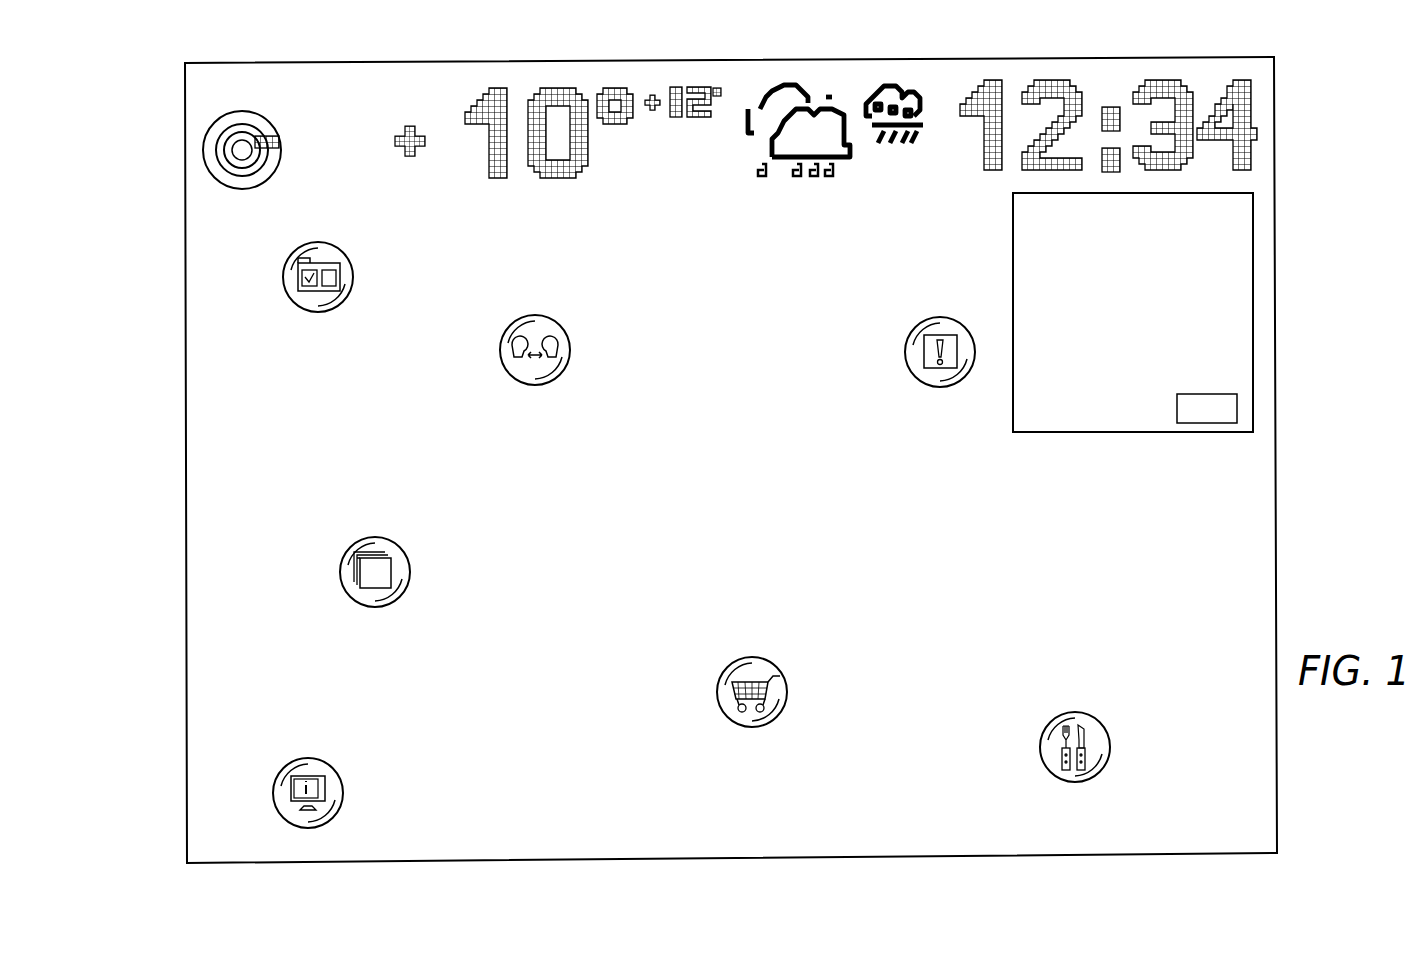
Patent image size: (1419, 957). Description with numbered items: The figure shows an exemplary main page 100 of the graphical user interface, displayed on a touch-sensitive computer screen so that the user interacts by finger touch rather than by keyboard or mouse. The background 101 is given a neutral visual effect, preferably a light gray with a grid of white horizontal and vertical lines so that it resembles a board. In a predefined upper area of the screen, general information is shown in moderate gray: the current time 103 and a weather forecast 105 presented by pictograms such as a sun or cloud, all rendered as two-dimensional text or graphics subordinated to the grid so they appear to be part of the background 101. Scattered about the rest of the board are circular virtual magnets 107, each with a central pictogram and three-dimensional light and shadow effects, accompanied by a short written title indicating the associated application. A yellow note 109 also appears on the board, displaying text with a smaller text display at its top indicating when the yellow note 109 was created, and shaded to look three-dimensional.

The main page 100 is at (271, 50).
The background 101 is at (1242, 508).
The current time 103 is at (1268, 65).
The weather forecast 105 is at (933, 66).
The virtual magnet 107 is at (355, 278).
The yellow note 109 is at (1245, 325).